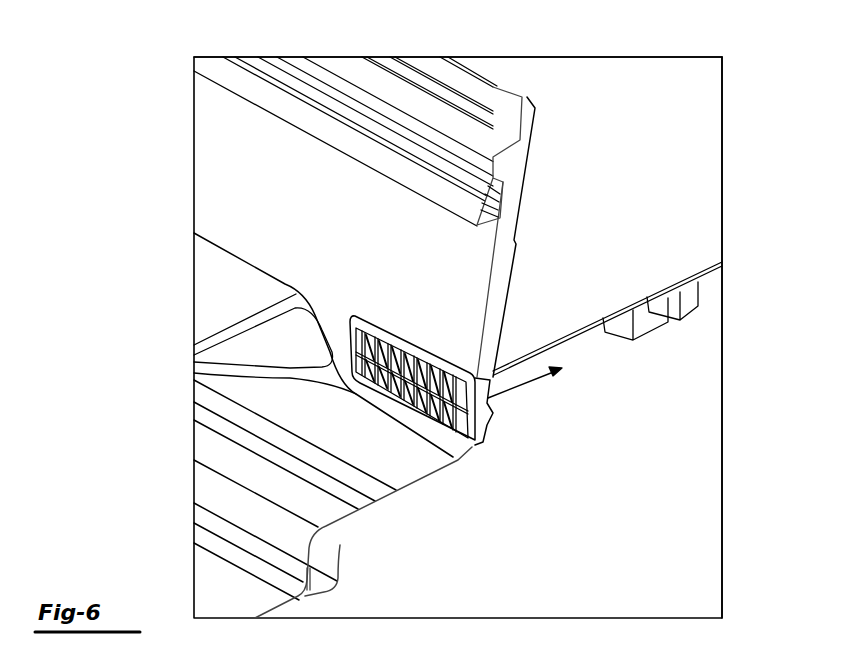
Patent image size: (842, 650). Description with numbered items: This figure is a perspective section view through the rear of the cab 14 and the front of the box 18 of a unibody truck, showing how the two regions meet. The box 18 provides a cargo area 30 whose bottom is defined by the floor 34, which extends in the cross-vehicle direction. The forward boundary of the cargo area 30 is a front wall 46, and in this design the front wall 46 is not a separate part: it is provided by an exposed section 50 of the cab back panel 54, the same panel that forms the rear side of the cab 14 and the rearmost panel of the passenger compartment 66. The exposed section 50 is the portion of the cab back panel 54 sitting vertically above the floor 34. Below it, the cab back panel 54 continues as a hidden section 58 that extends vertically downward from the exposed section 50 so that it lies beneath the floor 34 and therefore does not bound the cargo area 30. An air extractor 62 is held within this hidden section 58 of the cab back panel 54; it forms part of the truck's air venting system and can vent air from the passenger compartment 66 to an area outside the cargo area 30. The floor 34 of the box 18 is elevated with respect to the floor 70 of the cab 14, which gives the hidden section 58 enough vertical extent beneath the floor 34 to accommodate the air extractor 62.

The cab 14 is at (193, 253).
The box 18 is at (620, 57).
The cargo area 30 is at (662, 80).
The floor 34 is at (692, 136).
The front wall 46 is at (486, 289).
The exposed section 50 is at (513, 244).
The cab back panel 54 is at (260, 90).
The hidden section 58 is at (468, 380).
The air extractor 62 is at (450, 416).
The passenger compartment 66 is at (375, 449).
The floor 70 is at (325, 515).